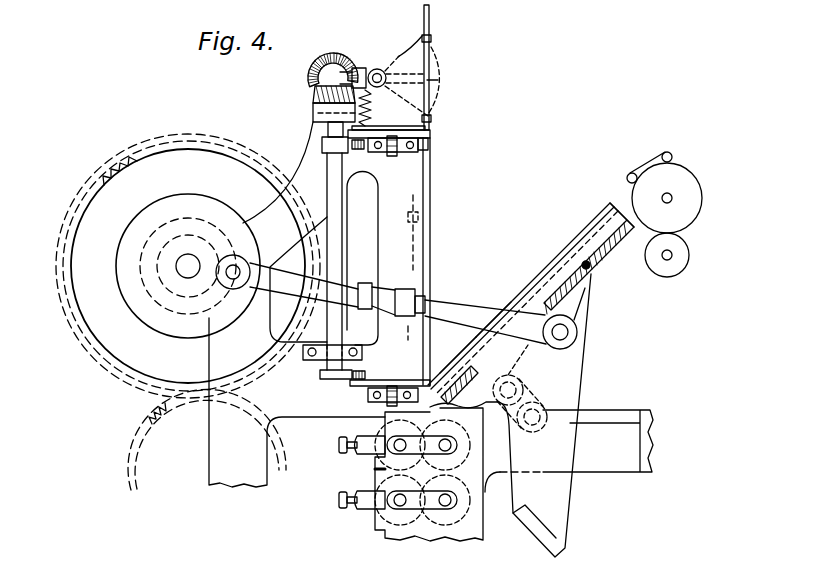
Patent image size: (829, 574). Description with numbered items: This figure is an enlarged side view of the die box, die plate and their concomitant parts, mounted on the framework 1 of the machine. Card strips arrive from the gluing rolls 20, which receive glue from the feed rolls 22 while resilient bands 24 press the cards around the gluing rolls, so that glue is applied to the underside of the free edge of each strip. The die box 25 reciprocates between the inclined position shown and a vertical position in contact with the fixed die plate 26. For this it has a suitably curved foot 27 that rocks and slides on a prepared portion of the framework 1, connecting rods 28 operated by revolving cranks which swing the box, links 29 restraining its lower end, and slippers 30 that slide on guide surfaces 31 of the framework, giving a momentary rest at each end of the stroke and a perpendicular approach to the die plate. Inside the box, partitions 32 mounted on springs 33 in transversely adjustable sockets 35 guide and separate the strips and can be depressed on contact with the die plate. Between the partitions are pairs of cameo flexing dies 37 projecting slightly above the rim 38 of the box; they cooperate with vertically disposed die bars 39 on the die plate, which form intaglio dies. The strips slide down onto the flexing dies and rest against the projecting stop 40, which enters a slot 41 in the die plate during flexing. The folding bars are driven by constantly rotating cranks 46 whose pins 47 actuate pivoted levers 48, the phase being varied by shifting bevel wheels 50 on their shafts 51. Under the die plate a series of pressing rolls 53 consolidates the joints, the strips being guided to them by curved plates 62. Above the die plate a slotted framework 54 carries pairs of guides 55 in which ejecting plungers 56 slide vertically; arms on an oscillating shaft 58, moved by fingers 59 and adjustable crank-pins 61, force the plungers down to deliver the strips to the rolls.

The framework 1 is at (297, 304).
The gluing rolls 20 is at (667, 198).
The feed rolls 22 is at (664, 277).
The resilient bands 24 is at (661, 159).
The die box 25 is at (619, 204).
The die plate 26 is at (425, 177).
The curved foot 27 is at (452, 412).
The connecting rods 28 is at (446, 311).
The links 29 is at (537, 405).
The slippers 30 is at (557, 533).
The guide surfaces 31 is at (621, 423).
The partitions 32 is at (584, 238).
The springs 33 is at (592, 266).
The sockets 35 is at (582, 292).
The cameo flexing dies 37 is at (523, 301).
The rim 38 is at (471, 345).
The die bars 39 is at (431, 242).
The projecting stop 40 is at (453, 379).
The slot 41 is at (429, 392).
The cranks 46 is at (340, 380).
The pins 47 is at (363, 377).
The pivoted levers 48 is at (358, 386).
The bevel wheels 50 is at (313, 95).
The shafts 51 is at (327, 182).
The pressing rolls 53 is at (429, 474).
The slotted framework 54 is at (409, 54).
The guides 55 is at (432, 40).
The ejecting plungers 56 is at (430, 20).
The shaft 58 is at (374, 69).
The fingers 59 is at (357, 68).
The adjustable crank-pins 61 is at (322, 73).
The curved plates 62 is at (386, 440).